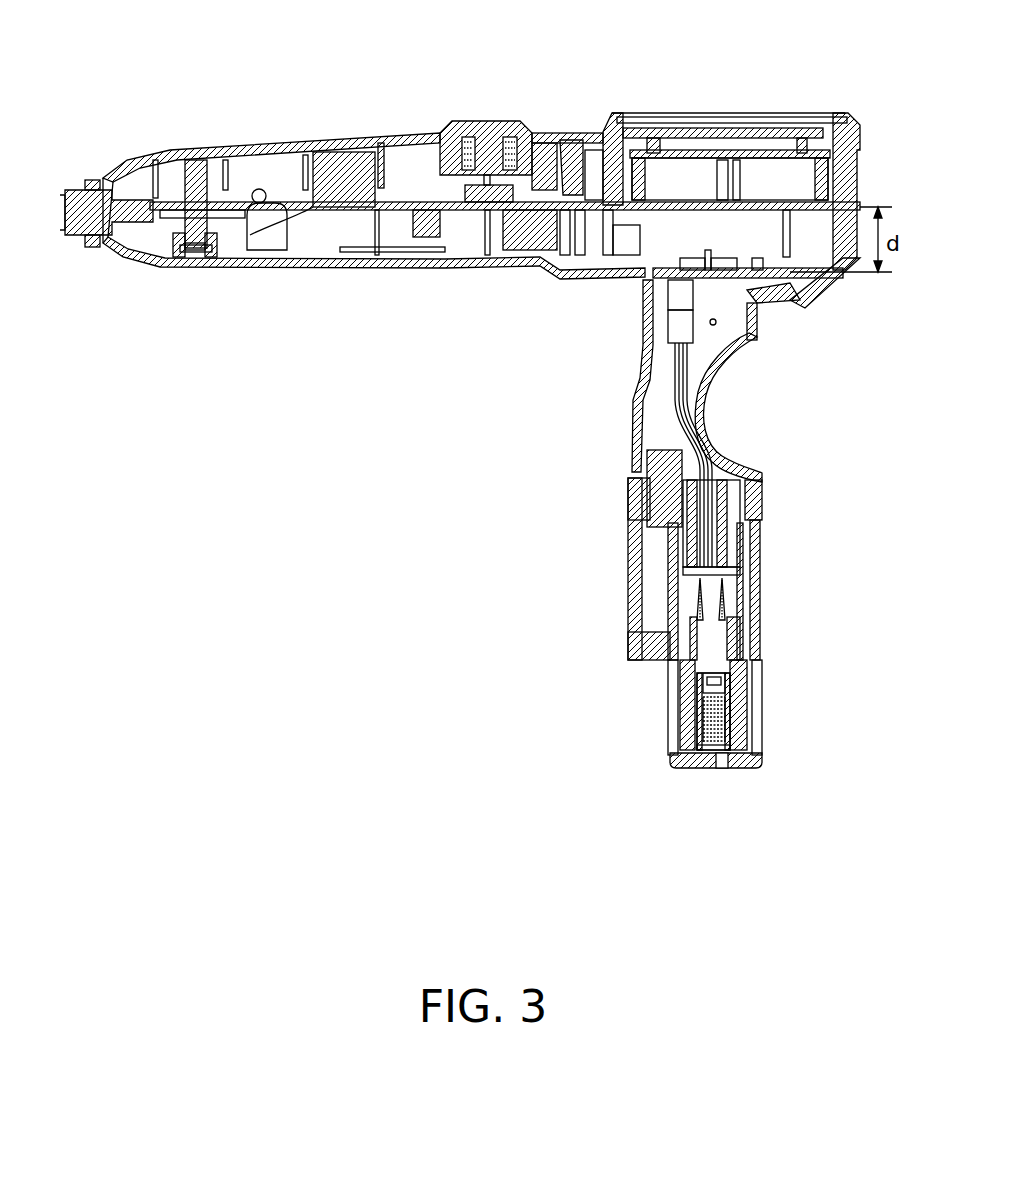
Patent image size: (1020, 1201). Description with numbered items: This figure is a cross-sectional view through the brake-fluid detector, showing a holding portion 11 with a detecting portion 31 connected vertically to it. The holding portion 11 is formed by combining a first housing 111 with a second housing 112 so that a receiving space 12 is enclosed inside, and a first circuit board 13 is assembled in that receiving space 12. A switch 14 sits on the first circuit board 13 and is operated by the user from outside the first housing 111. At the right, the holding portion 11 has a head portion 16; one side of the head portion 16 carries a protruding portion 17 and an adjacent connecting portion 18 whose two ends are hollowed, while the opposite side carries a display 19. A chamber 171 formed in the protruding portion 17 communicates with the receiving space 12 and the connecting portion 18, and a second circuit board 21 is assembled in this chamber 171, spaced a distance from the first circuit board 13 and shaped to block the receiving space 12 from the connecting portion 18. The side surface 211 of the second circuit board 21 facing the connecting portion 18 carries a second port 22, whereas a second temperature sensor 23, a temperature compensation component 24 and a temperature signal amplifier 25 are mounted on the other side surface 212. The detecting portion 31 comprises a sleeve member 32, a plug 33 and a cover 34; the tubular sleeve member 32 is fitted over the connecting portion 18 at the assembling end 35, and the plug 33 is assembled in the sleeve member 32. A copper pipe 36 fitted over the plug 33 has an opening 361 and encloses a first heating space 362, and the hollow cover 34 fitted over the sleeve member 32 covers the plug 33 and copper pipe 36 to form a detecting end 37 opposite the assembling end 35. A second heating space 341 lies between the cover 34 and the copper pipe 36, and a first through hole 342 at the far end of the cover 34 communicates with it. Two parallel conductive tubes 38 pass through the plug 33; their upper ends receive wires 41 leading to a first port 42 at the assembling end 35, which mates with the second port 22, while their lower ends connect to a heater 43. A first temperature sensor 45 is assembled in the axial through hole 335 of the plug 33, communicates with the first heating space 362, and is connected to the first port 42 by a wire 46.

The holding portion 11 is at (497, 275).
The first housing 111 is at (305, 138).
The second housing 112 is at (292, 270).
The receiving space 12 is at (617, 246).
The first circuit board 13 is at (660, 205).
The switch 14 is at (485, 120).
The head portion 16 is at (857, 185).
The protruding portion 17 is at (790, 290).
The chamber 171 is at (772, 290).
The connecting portion 18 is at (758, 335).
The display 19 is at (757, 128).
The second circuit board 21 is at (793, 273).
The side surface 211 is at (672, 285).
The other side surface 212 is at (680, 262).
The second port 22 is at (690, 308).
The second temperature sensor 23 is at (763, 263).
The temperature compensation component 24 is at (723, 262).
The temperature signal amplifier 25 is at (694, 262).
The detecting portion 31 is at (765, 498).
The sleeve member 32 is at (720, 450).
The plug 33 is at (743, 643).
The through hole 335 is at (733, 628).
The cover 34 is at (758, 718).
The second heating space 341 is at (683, 710).
The first through hole 342 is at (687, 760).
The assembling end 35 is at (750, 320).
The copper pipe 36 is at (737, 742).
The opening 361 is at (728, 752).
The first heating space 362 is at (732, 725).
The detecting end 37 is at (723, 768).
The conductive tubes 38 is at (695, 673).
The wires 41 is at (700, 575).
The first port 42 is at (650, 355).
The heater 43 is at (705, 732).
The first temperature sensor 45 is at (712, 680).
The wire 46 is at (723, 593).